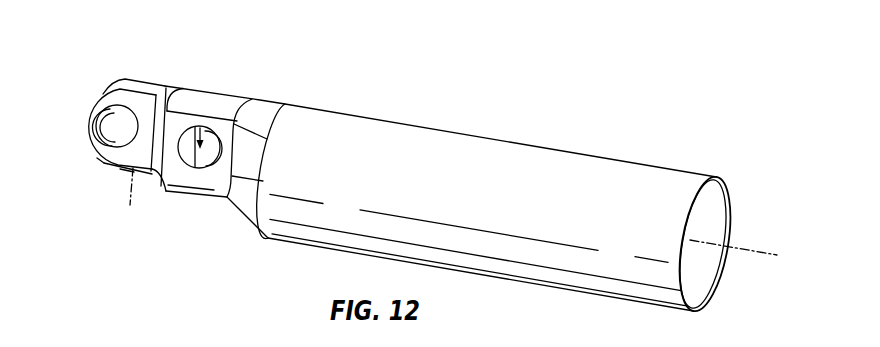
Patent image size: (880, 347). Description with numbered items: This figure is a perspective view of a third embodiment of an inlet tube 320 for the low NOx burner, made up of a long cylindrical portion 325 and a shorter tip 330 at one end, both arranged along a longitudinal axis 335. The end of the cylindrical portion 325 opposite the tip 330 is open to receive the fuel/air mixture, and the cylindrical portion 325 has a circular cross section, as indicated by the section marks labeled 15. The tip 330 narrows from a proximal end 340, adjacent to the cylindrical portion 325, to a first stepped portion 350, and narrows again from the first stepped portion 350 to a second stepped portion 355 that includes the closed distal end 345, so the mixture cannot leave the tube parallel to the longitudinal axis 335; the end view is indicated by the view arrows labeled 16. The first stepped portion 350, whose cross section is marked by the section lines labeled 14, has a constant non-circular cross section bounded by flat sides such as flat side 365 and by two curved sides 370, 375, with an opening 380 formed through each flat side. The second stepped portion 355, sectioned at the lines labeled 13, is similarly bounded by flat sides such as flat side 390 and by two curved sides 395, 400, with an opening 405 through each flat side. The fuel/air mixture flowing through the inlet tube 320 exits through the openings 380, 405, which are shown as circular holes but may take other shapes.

The inlet tube 320 is at (713, 151).
The cylindrical portion 325 is at (595, 172).
The tip 330 is at (203, 86).
The longitudinal axis 335 is at (752, 248).
The proximal end 340 is at (287, 108).
The distal end 345 is at (82, 120).
The first stepped portion 350 is at (208, 196).
The second stepped portion 355 is at (104, 166).
The flat side 365 is at (176, 168).
The curved side 370 is at (226, 99).
The curved side 375 is at (192, 168).
The opening 380 is at (263, 181).
The flat side 390 is at (97, 158).
The curved side 395 is at (137, 80).
The curved side 400 is at (125, 172).
The opening 405 is at (120, 115).
The section line 13- 13 is at (143, 47).
The section line 14- 14 is at (210, 39).
The section line 15- 15 is at (512, 111).
The view direction 16 is at (82, 135).